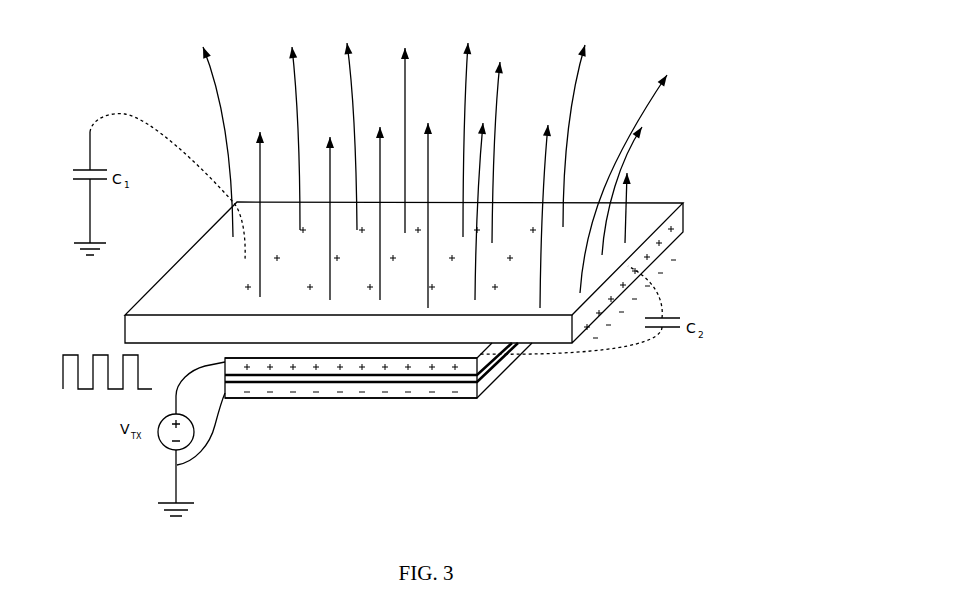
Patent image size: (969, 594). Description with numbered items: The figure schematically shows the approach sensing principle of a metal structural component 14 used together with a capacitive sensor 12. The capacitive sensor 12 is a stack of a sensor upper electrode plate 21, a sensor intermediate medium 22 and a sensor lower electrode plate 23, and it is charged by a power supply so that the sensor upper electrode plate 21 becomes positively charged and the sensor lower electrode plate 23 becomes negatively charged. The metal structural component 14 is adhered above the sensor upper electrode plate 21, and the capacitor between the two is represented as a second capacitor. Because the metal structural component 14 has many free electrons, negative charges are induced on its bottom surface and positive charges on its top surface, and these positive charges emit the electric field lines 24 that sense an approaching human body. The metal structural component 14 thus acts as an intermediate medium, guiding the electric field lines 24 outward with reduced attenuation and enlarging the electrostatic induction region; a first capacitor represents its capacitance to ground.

The capacitive sensor 12 is at (658, 368).
The metal structural component 14 is at (670, 242).
The sensor upper electrode plate 21 is at (478, 362).
The sensor intermediate medium 22 is at (478, 380).
The sensor lower electrode plate 23 is at (460, 398).
The electric field lines 24 is at (632, 155).